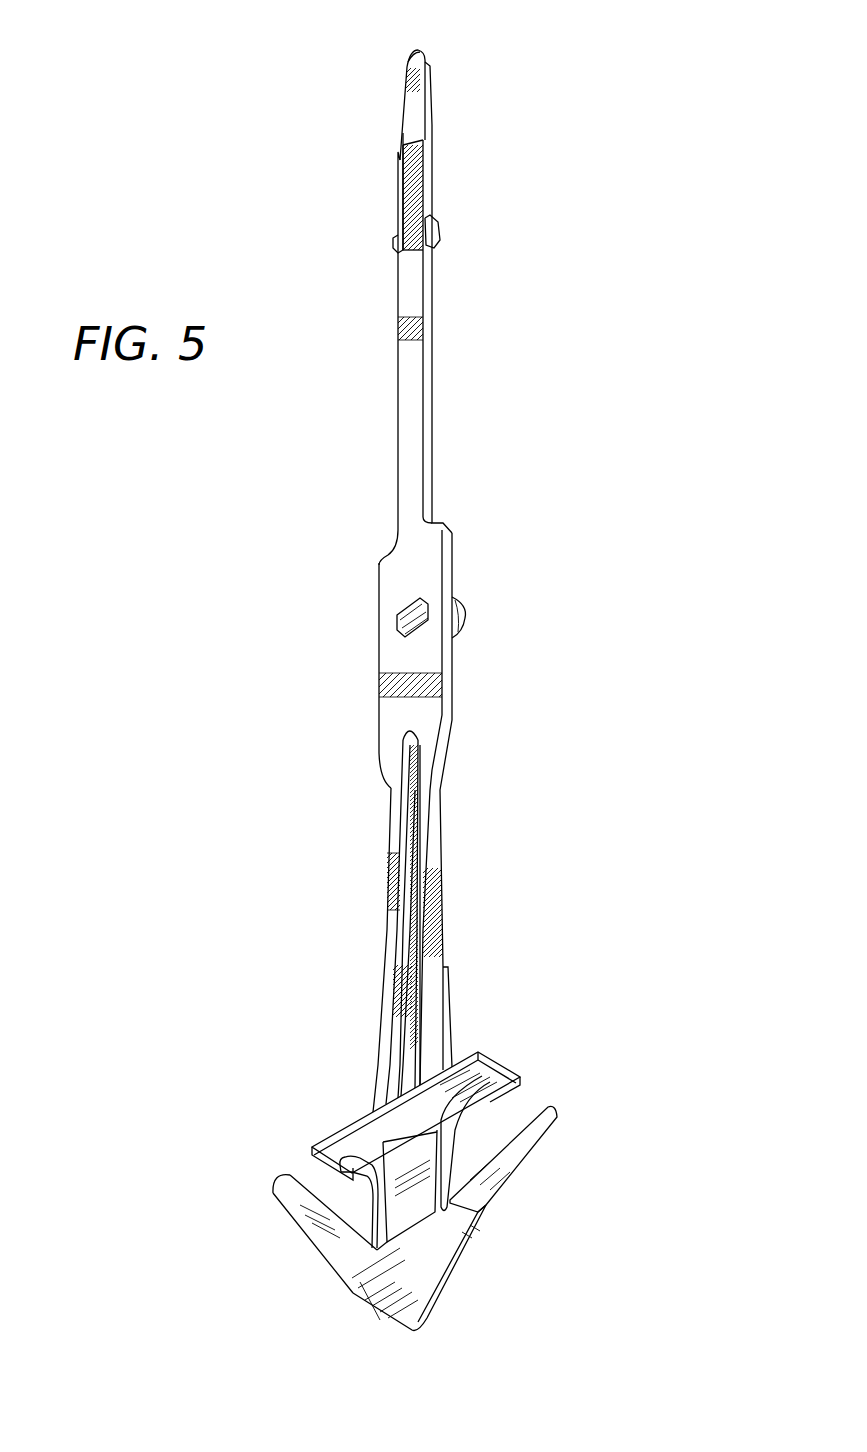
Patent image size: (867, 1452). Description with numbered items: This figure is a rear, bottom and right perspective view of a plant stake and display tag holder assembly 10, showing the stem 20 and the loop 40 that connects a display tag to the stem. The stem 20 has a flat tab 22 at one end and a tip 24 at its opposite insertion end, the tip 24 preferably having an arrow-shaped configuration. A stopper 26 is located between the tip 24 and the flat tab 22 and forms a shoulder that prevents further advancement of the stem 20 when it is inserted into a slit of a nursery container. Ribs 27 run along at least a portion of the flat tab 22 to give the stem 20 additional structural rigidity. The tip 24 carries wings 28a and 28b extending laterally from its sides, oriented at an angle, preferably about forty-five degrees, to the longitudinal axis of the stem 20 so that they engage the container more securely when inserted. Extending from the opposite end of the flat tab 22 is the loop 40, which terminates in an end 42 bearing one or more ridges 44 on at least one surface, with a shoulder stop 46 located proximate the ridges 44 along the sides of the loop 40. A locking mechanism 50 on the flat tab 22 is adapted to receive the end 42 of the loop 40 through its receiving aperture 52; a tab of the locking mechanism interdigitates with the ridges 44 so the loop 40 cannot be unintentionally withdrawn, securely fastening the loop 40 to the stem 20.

The plant stake and display tag holder assembly 10 is at (258, 596).
The stem 20 is at (372, 860).
The flat tab 22 is at (427, 664).
The tip 24 is at (413, 1330).
The stopper 26 is at (497, 1058).
The ribs 27 is at (403, 982).
The wing 28a is at (525, 1160).
The wing 28b is at (300, 1222).
The loop 40 is at (432, 385).
The end 42 is at (420, 50).
The ridges 44 is at (402, 192).
The shoulder stop 46 is at (434, 232).
The locking mechanism 50 is at (460, 612).
The receiving aperture 52 is at (397, 622).